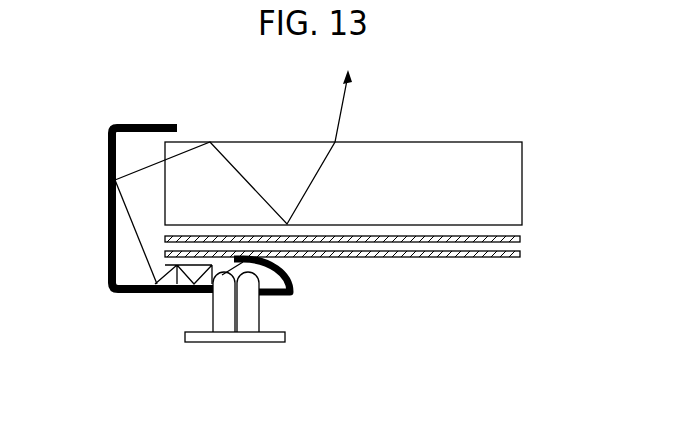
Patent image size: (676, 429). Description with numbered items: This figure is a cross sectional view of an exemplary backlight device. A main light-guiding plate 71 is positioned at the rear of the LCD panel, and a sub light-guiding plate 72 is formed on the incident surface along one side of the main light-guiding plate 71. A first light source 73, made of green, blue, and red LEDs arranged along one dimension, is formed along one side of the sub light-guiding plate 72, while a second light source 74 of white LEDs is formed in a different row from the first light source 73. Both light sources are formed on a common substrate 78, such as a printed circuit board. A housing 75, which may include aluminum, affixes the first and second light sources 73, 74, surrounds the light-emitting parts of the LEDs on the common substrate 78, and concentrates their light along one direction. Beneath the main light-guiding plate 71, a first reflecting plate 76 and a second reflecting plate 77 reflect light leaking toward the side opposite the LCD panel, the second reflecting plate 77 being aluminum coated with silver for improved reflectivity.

The main light-guiding plate 71 is at (512, 185).
The sub light-guiding plate 72 is at (180, 295).
The first light source 73 is at (227, 325).
The second light source 74 is at (250, 315).
The housing 75 is at (108, 243).
The first reflecting plate 76 is at (520, 239).
The second reflecting plate 77 is at (520, 254).
The common substrate 78 is at (250, 337).